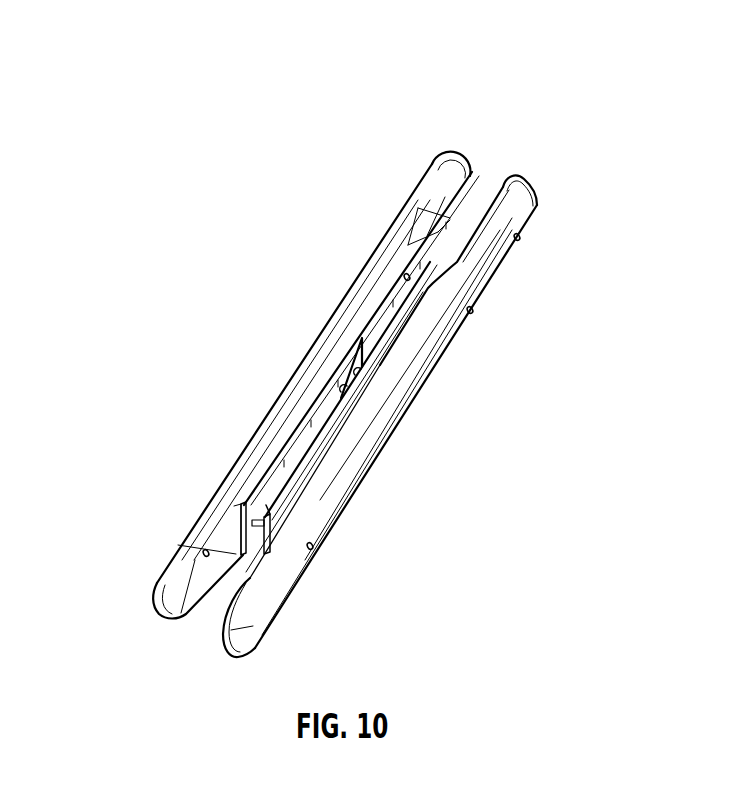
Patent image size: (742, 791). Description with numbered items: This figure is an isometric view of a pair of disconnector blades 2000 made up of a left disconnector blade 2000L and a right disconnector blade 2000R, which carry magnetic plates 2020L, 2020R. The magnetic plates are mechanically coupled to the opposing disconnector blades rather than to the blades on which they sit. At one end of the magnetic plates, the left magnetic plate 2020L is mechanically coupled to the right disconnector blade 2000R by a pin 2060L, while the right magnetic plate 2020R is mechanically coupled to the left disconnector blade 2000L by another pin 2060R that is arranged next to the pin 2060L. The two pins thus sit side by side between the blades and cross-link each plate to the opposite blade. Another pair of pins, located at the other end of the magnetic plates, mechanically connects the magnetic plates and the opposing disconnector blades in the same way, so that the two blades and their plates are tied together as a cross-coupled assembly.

The pair of disconnector blades 2000 is at (368, 90).
The left disconnector blade 2000L is at (440, 168).
The right disconnector blade 2000R is at (522, 193).
The left magnetic plate 2020L is at (298, 423).
The right magnetic plate 2020R is at (343, 384).
The pin 2060L is at (245, 502).
The pin 2060R is at (267, 507).